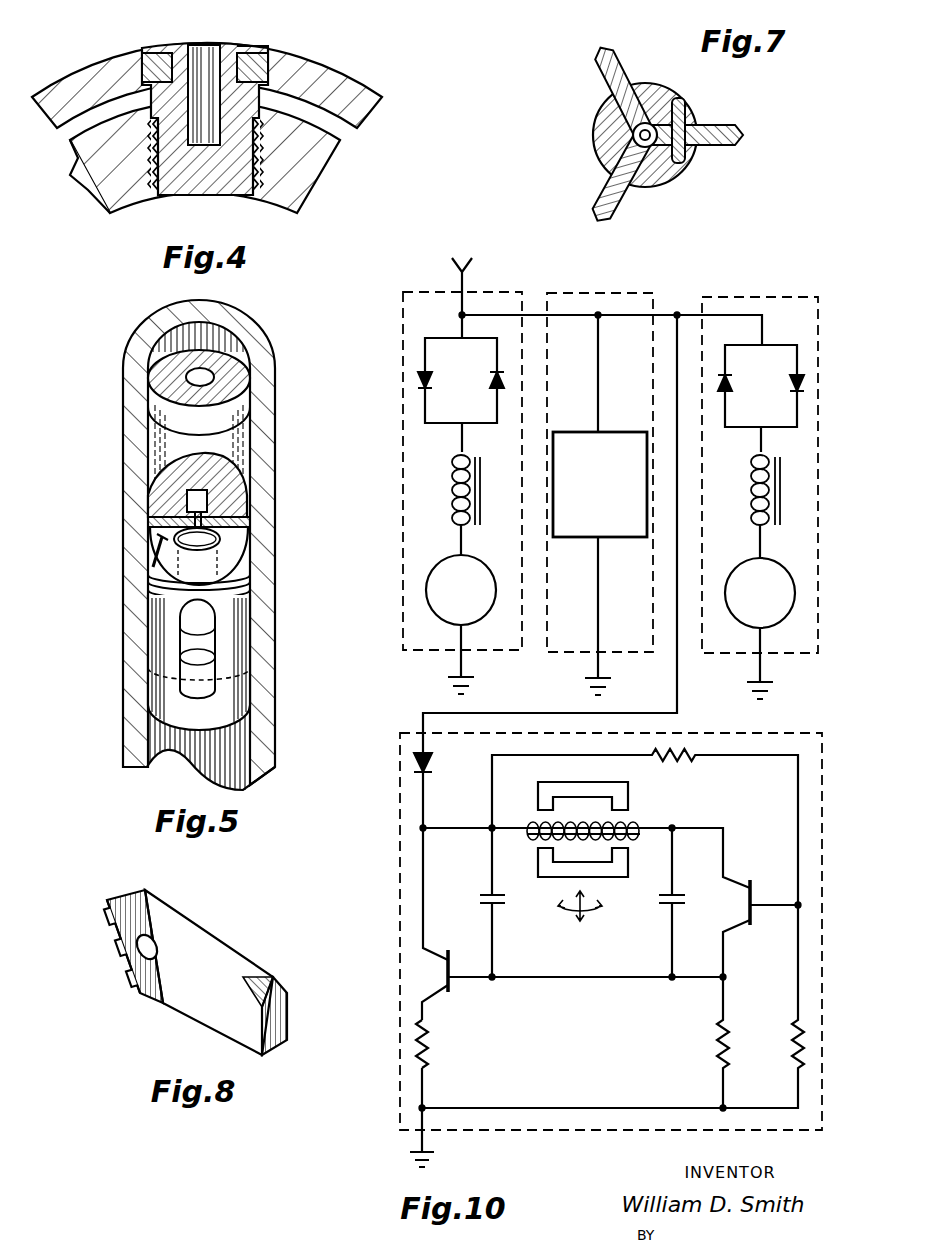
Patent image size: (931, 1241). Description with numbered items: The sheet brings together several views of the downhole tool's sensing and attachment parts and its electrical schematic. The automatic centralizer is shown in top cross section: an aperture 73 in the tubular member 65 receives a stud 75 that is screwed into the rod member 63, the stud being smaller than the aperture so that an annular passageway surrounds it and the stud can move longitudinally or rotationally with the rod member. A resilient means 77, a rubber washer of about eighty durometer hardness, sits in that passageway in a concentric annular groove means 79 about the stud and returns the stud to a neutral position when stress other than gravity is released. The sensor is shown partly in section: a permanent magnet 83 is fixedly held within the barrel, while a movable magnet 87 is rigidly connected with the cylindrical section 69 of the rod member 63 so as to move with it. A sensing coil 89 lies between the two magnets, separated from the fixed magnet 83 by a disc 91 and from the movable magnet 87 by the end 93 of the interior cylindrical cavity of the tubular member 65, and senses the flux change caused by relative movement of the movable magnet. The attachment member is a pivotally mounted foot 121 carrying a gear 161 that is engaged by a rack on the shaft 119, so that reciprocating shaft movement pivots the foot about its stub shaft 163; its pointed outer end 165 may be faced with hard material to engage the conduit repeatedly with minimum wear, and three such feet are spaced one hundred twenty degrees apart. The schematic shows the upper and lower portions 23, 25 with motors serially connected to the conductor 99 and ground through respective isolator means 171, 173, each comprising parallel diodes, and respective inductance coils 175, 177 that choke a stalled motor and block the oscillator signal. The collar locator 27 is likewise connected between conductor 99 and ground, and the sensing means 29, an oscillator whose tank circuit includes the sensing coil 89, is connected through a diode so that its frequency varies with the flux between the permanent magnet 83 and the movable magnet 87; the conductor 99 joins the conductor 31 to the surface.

In FIG. 4, the rod member 63 is at (315, 180).
In FIG. 4, the tubular member 65 is at (340, 82).
In FIG. 4, the aperture 73 is at (145, 50).
In FIG. 4, the stud 75 is at (232, 58).
In FIG. 4, the resilient means 77 is at (268, 66).
In FIG. 4, the annular groove means 79 is at (165, 72).
In FIG. 5, the cylindrical section 69 is at (150, 395).
In FIG. 5, the movable magnet 87 is at (228, 445).
In FIG. 10, the movable magnet 87 is at (612, 877).
In FIG. 5, the sensing coil 89 is at (243, 538).
In FIG. 5, the disc 91 is at (150, 583).
In FIG. 5, the end of interior cylindrical cavity 93 is at (148, 520).
In FIG. 5, the conductor 99 is at (157, 545).
In FIG. 10, the conductor 99 is at (532, 315).
In FIG. 5, the permanent magnet 83 is at (240, 680).
In FIG. 10, the permanent magnet 83 is at (538, 795).
In FIG. 7, the shaft 119 is at (633, 133).
In FIG. 7, the foot 121 is at (717, 142).
In FIG. 8, the foot 121 is at (208, 942).
In FIG. 7, the stub shaft 163 is at (690, 100).
In FIG. 8, the gear 161 is at (120, 968).
In FIG. 8, the pointed outer end 165 is at (277, 983).
In FIG. 10, the conductor 31 is at (468, 270).
In FIG. 10, the isolator means 171 is at (452, 338).
In FIG. 10, the isolator means 173 is at (780, 345).
In FIG. 10, the inductance coil 175 is at (452, 462).
In FIG. 10, the inductance coil 177 is at (782, 470).
In FIG. 10, the upper portion 23 is at (428, 468).
In FIG. 10, the lower portion 25 is at (787, 478).
In FIG. 10, the collar locator 27 is at (568, 650).
In FIG. 10, the sensing means 29 is at (586, 950).